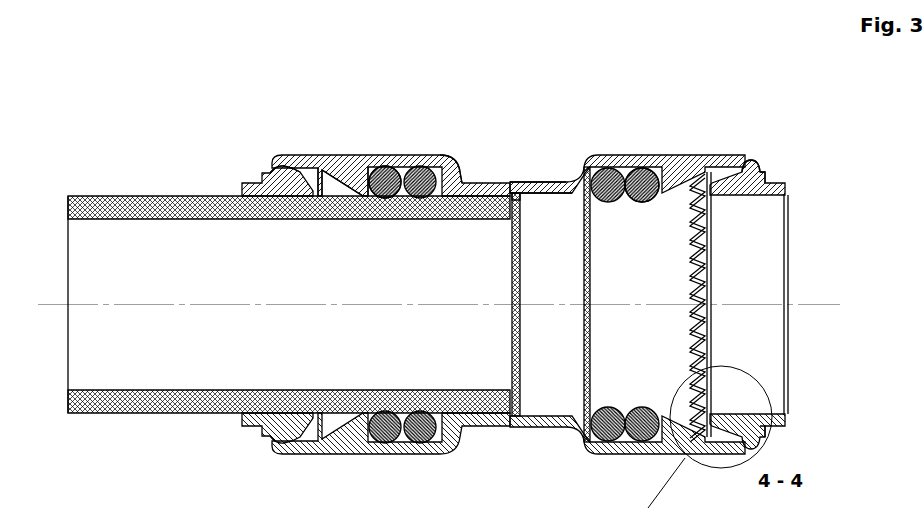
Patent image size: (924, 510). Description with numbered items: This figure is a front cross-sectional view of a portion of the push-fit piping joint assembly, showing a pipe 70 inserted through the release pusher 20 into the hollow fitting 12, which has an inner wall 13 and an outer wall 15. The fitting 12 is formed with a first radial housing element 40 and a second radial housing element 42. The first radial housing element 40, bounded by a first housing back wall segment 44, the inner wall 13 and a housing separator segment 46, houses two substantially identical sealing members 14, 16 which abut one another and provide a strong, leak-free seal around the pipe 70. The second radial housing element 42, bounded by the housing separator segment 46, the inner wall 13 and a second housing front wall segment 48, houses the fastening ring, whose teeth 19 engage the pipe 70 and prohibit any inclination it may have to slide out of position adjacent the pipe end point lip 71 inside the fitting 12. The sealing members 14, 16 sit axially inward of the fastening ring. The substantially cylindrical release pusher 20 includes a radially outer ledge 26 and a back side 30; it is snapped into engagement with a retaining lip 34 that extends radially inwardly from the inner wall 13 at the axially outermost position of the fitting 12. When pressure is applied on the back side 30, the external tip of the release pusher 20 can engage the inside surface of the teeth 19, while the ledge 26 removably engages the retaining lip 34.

The pipe 70 is at (167, 200).
The release pusher 20 is at (267, 180).
The second radial housing element 42 is at (300, 157).
The second housing front wall segment 48 is at (311, 165).
The housing separator segment 46 is at (352, 164).
The first radial housing element 40 is at (405, 164).
The first housing back wall segment 44 is at (452, 166).
The sealing member 16 is at (607, 170).
The sealing member 14 is at (377, 199).
The fitting 12 is at (546, 180).
The pipe end point lip 71 is at (514, 192).
The inner wall 13 is at (549, 197).
The outer wall 15 is at (655, 156).
The radially outer ledge 26 is at (747, 163).
The retaining lip 34 is at (760, 167).
The back side 30 is at (789, 187).
The teeth 19 is at (701, 344).